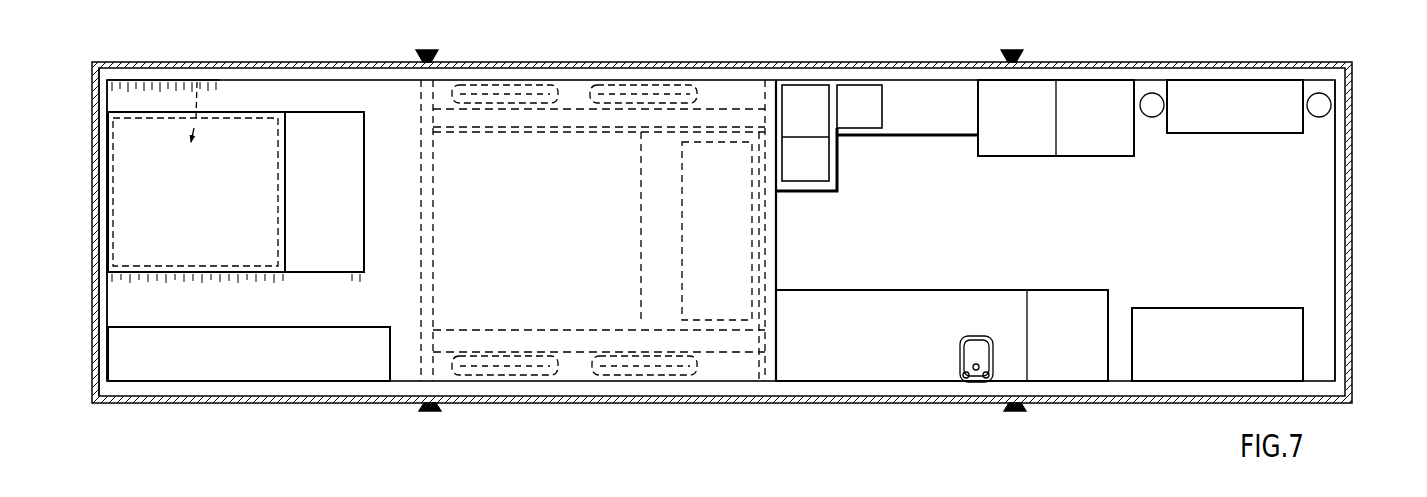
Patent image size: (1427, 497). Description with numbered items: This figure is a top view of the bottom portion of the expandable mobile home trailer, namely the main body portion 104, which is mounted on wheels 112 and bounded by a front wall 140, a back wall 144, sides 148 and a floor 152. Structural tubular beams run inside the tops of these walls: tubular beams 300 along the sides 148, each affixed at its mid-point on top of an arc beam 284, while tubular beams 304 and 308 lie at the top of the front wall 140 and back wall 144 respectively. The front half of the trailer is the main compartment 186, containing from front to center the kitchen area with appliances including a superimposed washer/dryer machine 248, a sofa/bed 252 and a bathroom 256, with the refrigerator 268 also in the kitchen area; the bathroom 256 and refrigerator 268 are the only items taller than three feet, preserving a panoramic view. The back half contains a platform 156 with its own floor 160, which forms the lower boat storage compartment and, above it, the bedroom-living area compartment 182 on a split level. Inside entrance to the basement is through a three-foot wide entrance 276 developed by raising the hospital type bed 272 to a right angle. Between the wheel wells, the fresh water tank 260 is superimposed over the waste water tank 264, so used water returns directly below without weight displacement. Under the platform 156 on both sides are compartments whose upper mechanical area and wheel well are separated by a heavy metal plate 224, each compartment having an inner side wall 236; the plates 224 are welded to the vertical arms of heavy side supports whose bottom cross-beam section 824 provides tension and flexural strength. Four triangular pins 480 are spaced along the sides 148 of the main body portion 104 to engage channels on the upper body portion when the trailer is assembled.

The main body portion 104 is at (812, 403).
The wheels 112 is at (623, 80).
The front wall 140 is at (1352, 277).
The back wall 144 is at (98, 242).
The sides 148 is at (1172, 62).
The floor 152 is at (1305, 237).
The platform 156 is at (146, 345).
The floor 160 is at (107, 90).
The bedroom-living area compartment 182 is at (390, 106).
The main compartment 186 is at (1297, 178).
The heavy plate 224 is at (478, 132).
The inner side wall 236 is at (618, 135).
The washer/dryer machine 248 is at (1064, 360).
The sofa/bed 252 is at (1190, 365).
The bathroom 256 is at (942, 363).
The fresh water tank 260 is at (730, 227).
The waste water tank 264 is at (655, 195).
The refrigerator 268 is at (1072, 110).
The hospital type bed 272 is at (235, 130).
The entrance 276 is at (198, 75).
The arc beam 284 is at (890, 68).
The tubular beams 300 is at (693, 72).
The tubular beam 304 is at (1340, 193).
The tubular beam 308 is at (103, 188).
The pins 480 is at (432, 50).
The bottom cross-beam section 824 is at (434, 290).